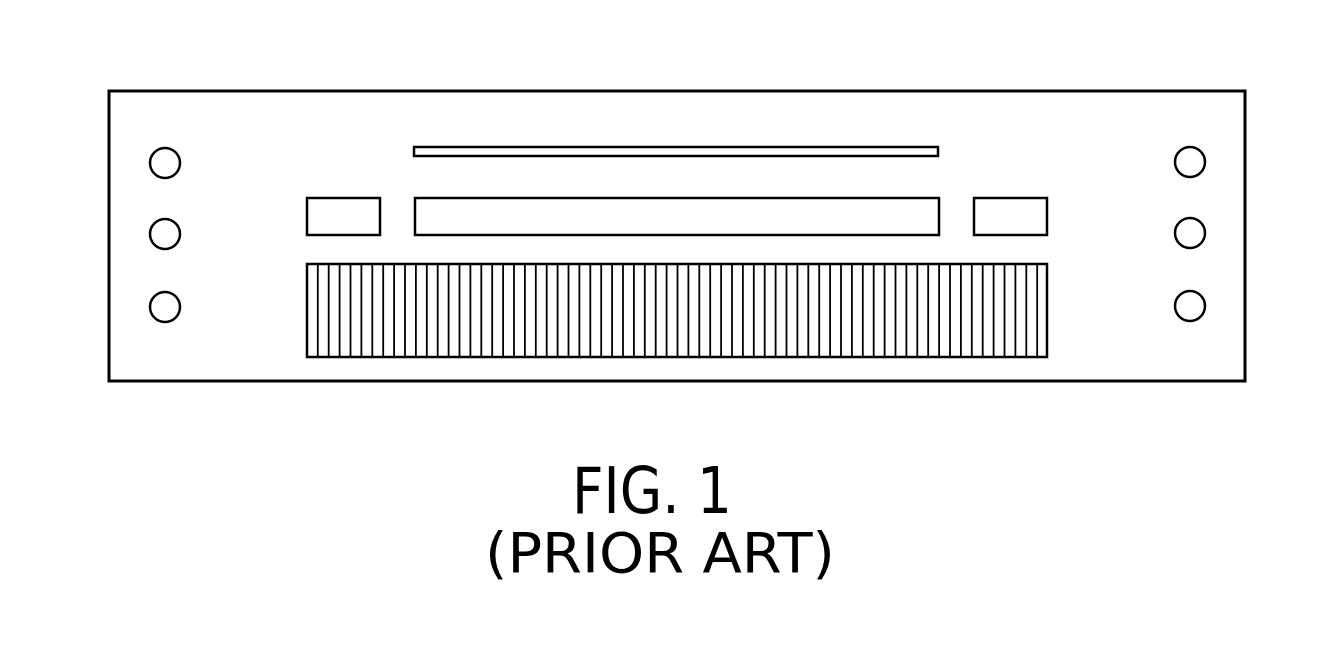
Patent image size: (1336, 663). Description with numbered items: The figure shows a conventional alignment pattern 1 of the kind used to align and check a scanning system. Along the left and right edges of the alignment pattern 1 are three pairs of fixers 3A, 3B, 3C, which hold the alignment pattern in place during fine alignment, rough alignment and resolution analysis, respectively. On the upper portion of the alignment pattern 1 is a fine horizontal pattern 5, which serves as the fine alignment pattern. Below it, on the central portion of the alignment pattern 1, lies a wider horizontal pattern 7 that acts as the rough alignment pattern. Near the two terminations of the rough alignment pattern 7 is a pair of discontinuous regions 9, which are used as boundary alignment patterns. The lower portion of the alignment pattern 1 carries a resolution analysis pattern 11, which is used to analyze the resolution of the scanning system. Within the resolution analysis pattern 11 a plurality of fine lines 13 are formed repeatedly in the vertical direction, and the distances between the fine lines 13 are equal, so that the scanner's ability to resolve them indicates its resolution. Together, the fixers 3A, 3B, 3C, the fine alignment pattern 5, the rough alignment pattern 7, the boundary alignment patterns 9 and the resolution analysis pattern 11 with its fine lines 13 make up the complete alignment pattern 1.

The alignment pattern 1 is at (1199, 80).
The fixer 3A is at (152, 166).
The fixer 3B is at (152, 237).
The fixer 3C is at (152, 309).
The fine horizontal pattern 5 is at (850, 147).
The horizontal pattern 7 is at (926, 213).
The discontinuous regions 9 is at (402, 210).
The resolution analysis pattern 11 is at (915, 357).
The fine lines 13 is at (417, 308).